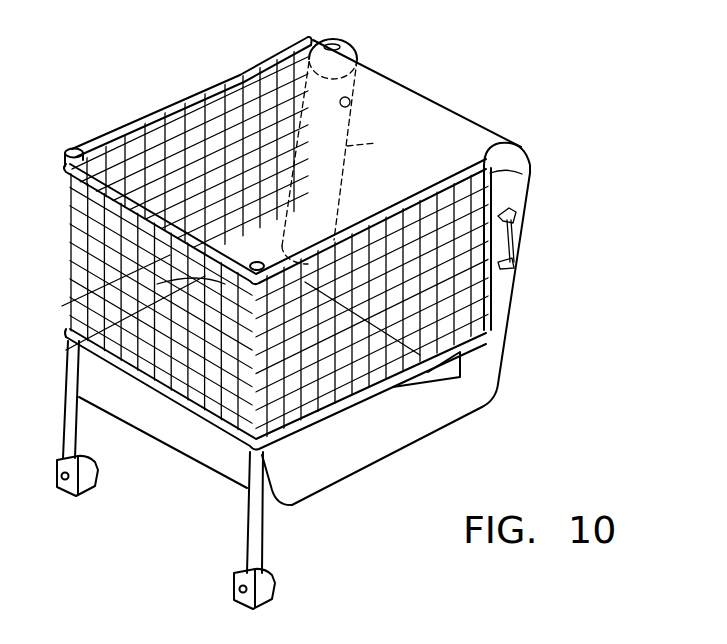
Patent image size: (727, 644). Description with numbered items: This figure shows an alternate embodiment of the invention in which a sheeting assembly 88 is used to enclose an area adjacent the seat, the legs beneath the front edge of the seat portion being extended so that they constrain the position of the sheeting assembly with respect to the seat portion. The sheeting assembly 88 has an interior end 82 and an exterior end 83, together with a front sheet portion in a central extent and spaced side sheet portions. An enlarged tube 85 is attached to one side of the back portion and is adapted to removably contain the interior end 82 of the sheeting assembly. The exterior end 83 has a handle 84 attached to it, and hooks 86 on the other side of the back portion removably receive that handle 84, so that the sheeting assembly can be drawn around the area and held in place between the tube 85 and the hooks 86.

The interior end 82 is at (352, 48).
The enlarged tube 85 is at (350, 104).
The sheeting assembly 88 is at (376, 143).
The exterior end 83 is at (528, 153).
The handle 84 is at (516, 232).
The hooks 86 is at (505, 214).